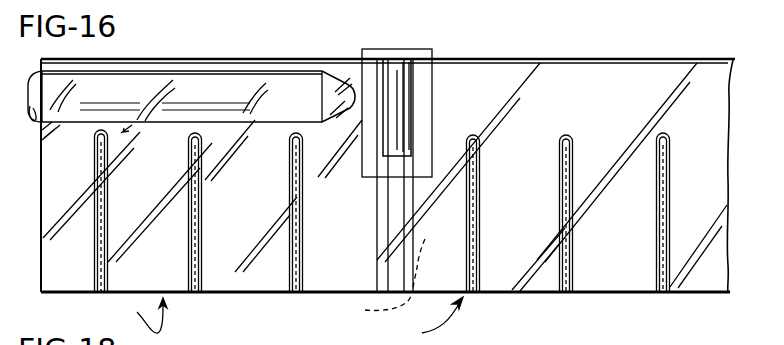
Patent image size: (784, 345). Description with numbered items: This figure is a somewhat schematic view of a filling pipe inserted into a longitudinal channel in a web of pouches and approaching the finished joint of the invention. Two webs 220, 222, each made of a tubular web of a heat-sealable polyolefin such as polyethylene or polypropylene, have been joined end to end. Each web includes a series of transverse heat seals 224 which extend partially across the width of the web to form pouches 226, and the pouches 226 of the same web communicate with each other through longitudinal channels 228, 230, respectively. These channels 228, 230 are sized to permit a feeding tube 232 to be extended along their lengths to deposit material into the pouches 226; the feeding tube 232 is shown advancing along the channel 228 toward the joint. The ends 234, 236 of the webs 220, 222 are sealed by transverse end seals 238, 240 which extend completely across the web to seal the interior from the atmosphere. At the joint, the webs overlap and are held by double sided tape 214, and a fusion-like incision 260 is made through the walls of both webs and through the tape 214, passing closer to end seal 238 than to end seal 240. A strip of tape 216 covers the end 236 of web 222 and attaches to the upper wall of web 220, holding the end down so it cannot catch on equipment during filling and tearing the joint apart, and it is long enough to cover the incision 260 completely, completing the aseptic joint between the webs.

The double sided tape 214 is at (403, 151).
The strip of tape 216 is at (423, 80).
The web 220 is at (128, 314).
The web 222 is at (420, 320).
The transverse heat seals 224 is at (106, 190).
The pouches 226 is at (46, 269).
The longitudinal channel 228 is at (203, 66).
The longitudinal channel 230 is at (573, 98).
The feeding tube 232 is at (128, 82).
The end 234 is at (438, 253).
The end 236 is at (376, 192).
The transverse end seal 238 is at (367, 307).
The transverse end seal 240 is at (384, 62).
The incision 260 is at (401, 103).